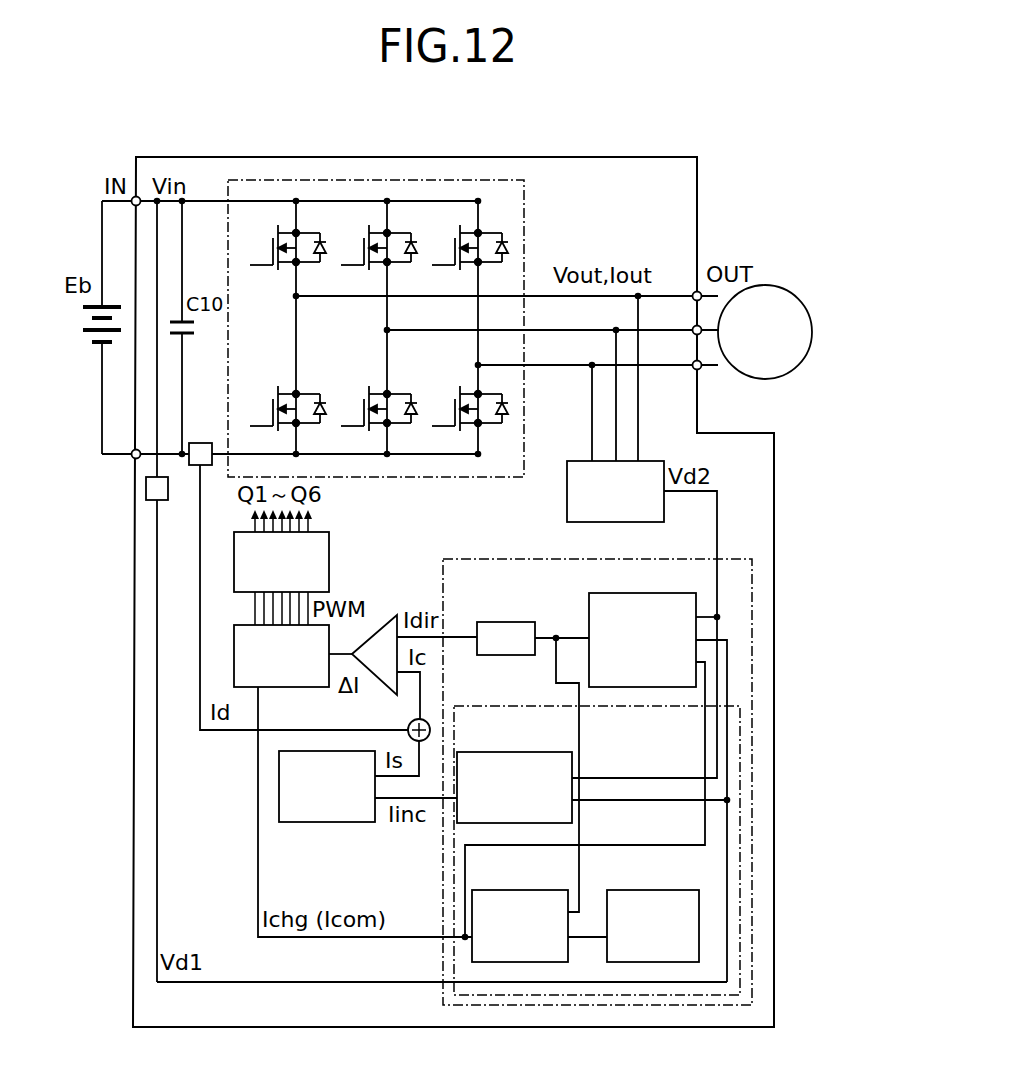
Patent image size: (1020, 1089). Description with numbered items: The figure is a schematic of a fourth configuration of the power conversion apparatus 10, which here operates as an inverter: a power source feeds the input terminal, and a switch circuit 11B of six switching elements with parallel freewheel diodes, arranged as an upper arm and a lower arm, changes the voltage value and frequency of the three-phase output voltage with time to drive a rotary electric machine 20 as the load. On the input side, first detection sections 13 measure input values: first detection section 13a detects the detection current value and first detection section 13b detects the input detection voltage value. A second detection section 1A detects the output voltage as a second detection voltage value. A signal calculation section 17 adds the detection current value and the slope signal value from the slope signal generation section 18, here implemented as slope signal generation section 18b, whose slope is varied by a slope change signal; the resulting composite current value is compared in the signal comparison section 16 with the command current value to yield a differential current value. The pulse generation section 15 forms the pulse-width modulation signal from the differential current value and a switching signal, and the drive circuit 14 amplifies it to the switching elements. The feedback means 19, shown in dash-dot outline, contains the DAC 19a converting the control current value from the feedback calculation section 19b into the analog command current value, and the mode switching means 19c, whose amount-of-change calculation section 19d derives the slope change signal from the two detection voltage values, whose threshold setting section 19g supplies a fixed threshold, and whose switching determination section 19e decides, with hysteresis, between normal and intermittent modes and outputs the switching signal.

The power conversion apparatus 10 is at (390, 156).
The switch circuit 11B is at (527, 235).
The first detection section 13 is at (154, 462).
The first detection section 13a is at (200, 443).
The first detection section 13b is at (146, 490).
The drive circuit 14 is at (234, 568).
The pulse generation section 15 is at (234, 660).
The signal comparison section 16 is at (373, 632).
The signal calculation section 17 is at (410, 722).
The slope signal generation section 18 is at (349, 804).
The slope signal generation section 18b is at (310, 823).
The feedback means 19 is at (552, 559).
The DAC 19a is at (505, 622).
The feedback calculation section 19b is at (625, 593).
The mode switching means 19c is at (484, 707).
The amount-of-change calculation section 19d is at (500, 752).
The switching determination section 19e is at (497, 890).
The threshold setting section 19g is at (637, 890).
The second detection section 1A is at (566, 490).
The rotary electric machine 20 is at (798, 299).